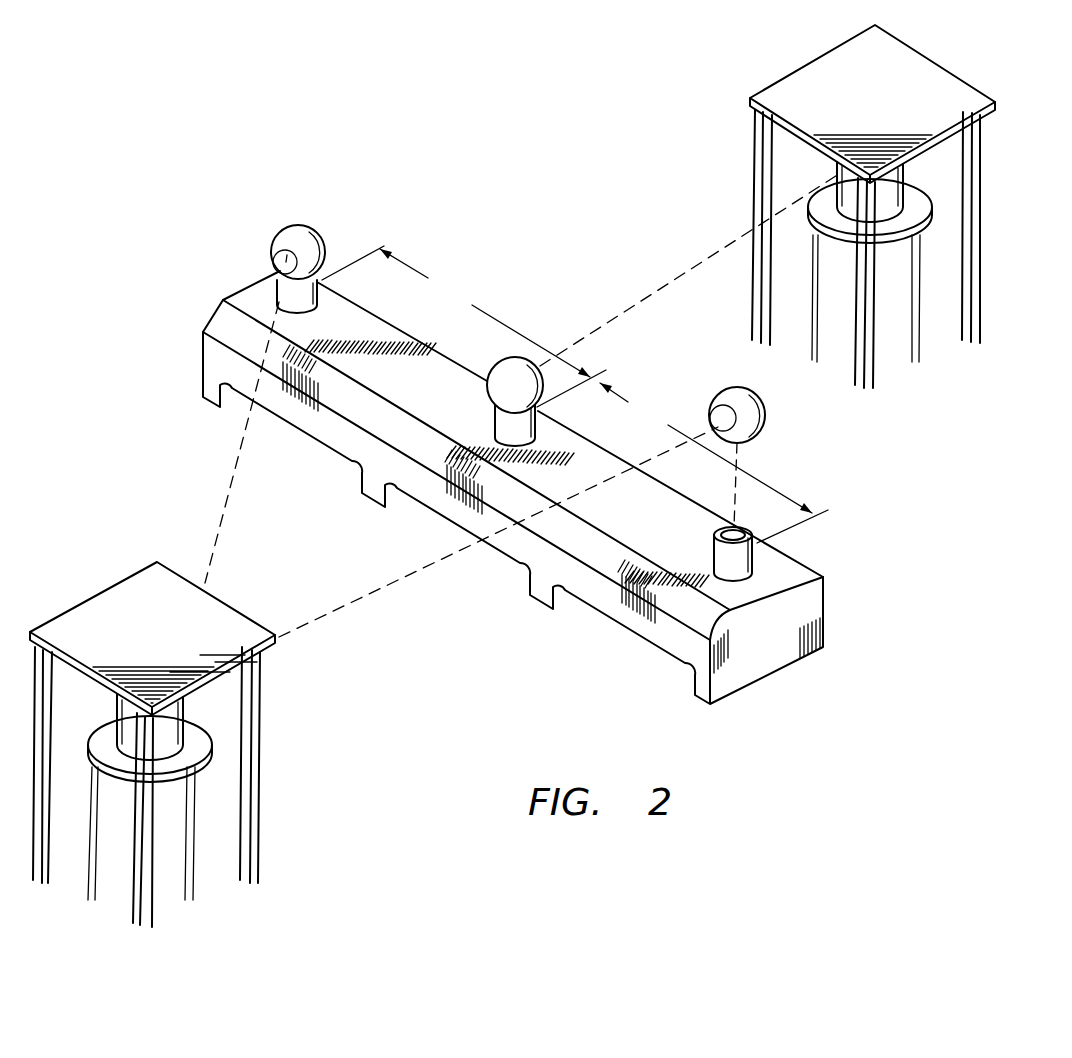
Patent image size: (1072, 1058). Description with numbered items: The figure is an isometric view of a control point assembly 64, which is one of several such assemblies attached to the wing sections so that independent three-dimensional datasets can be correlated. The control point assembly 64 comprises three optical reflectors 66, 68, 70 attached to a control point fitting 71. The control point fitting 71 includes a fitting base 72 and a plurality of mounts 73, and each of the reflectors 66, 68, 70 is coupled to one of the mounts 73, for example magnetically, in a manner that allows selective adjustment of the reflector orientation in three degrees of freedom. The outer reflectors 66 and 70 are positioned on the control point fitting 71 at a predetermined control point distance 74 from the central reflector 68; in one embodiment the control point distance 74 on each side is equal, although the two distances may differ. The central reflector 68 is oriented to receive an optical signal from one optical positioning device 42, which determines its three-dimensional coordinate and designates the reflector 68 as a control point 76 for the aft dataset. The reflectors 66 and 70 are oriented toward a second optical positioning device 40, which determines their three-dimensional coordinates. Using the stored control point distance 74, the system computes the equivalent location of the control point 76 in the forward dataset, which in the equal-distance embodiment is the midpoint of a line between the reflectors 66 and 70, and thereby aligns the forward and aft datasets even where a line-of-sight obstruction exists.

The optical positioning device 40 is at (265, 705).
The optical positioning device 42 is at (988, 143).
The control point assembly 64 is at (595, 486).
The optical reflector 66 is at (292, 228).
The optical reflector 68 is at (512, 368).
The optical reflector 70 is at (737, 390).
The control point fitting 71 is at (513, 535).
The fitting base 72 is at (771, 675).
The mount 73 is at (312, 297).
The control point distance 74 is at (575, 394).
The control point 76 is at (537, 363).